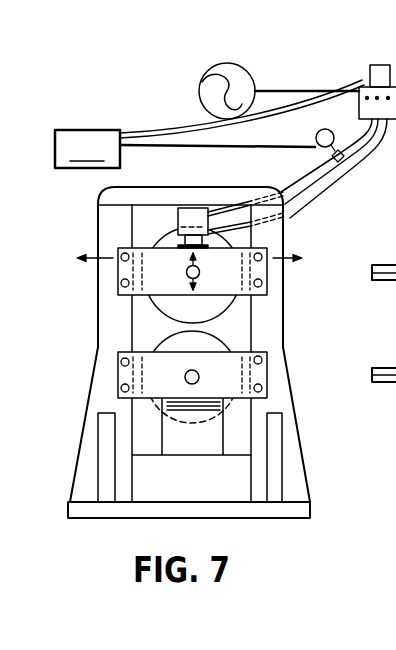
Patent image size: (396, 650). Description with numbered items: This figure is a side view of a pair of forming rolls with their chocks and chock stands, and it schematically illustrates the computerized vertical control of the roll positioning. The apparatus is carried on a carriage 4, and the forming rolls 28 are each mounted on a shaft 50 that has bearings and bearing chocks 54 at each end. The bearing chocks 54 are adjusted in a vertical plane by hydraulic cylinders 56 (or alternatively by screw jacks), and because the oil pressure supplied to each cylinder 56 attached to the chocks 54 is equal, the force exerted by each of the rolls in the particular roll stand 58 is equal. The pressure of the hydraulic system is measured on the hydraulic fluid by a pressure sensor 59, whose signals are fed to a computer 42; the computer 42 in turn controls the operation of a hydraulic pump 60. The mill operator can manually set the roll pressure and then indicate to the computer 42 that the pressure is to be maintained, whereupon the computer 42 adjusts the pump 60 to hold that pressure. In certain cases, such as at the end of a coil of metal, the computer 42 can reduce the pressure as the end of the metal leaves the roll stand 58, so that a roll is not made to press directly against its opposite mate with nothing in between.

The carriage 4 is at (72, 512).
The forming rolls 28 is at (213, 301).
The computer 42 is at (225, 141).
The shaft 50 is at (180, 375).
The bearing chocks 54 is at (250, 383).
The hydraulic cylinders 56 is at (196, 215).
The roll stand 58 is at (105, 327).
The pressure sensor 59 is at (324, 129).
The hydraulic pump 60 is at (234, 67).